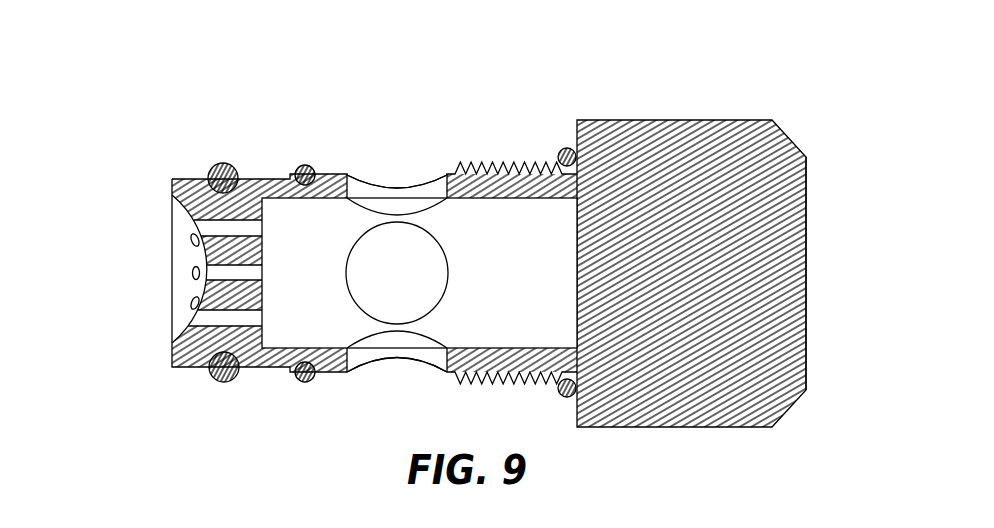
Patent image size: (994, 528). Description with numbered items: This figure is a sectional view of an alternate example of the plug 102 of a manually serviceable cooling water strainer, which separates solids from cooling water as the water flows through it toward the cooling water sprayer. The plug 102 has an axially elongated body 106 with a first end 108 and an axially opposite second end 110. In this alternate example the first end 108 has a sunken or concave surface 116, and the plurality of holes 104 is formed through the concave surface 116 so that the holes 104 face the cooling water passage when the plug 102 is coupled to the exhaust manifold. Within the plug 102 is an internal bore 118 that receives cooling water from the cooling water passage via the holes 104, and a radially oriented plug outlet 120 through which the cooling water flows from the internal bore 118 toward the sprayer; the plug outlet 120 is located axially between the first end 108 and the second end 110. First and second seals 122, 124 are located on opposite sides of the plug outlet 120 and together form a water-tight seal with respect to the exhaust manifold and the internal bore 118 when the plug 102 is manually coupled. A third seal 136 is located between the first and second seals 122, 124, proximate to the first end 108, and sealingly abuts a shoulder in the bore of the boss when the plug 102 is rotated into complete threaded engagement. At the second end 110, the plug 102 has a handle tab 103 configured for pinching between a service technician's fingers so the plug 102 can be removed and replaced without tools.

The plug 102 is at (648, 123).
The handle tab 103 is at (780, 347).
The holes 104 is at (182, 312).
The axially elongated body 106 is at (337, 177).
The first end 108 is at (325, 236).
The second end 110 is at (493, 238).
The concave surface 116 is at (185, 218).
The internal bore 118 is at (492, 287).
The plug outlet 120 is at (426, 174).
The first seal 122 is at (565, 148).
The second seal 124 is at (218, 163).
The third seal 136 is at (297, 162).